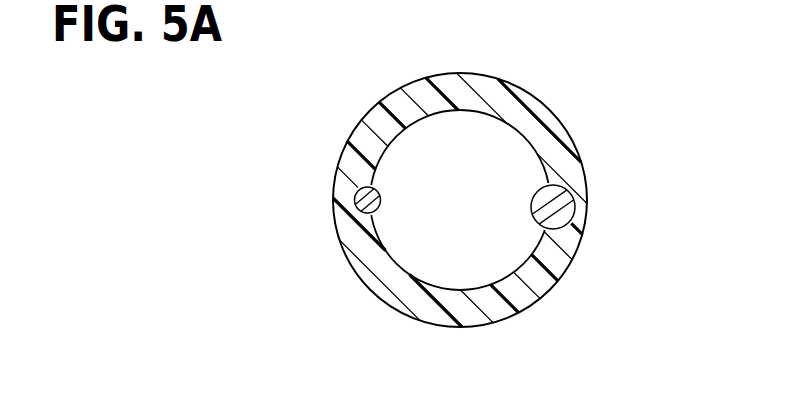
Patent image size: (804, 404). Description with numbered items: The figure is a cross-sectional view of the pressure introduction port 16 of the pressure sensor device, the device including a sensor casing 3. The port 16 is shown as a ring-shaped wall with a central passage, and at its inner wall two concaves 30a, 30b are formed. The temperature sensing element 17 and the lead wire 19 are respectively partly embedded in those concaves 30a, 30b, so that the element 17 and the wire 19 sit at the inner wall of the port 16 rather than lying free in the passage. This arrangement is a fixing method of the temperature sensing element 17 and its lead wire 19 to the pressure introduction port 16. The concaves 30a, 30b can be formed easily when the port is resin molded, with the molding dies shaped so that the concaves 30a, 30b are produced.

The sensor casing 3 is at (555, 152).
The pressure introduction port 16 is at (478, 143).
The temperature sensing element 17 is at (557, 210).
The lead wire 19 is at (362, 215).
The concave 30a is at (567, 257).
The concave 30b is at (362, 186).